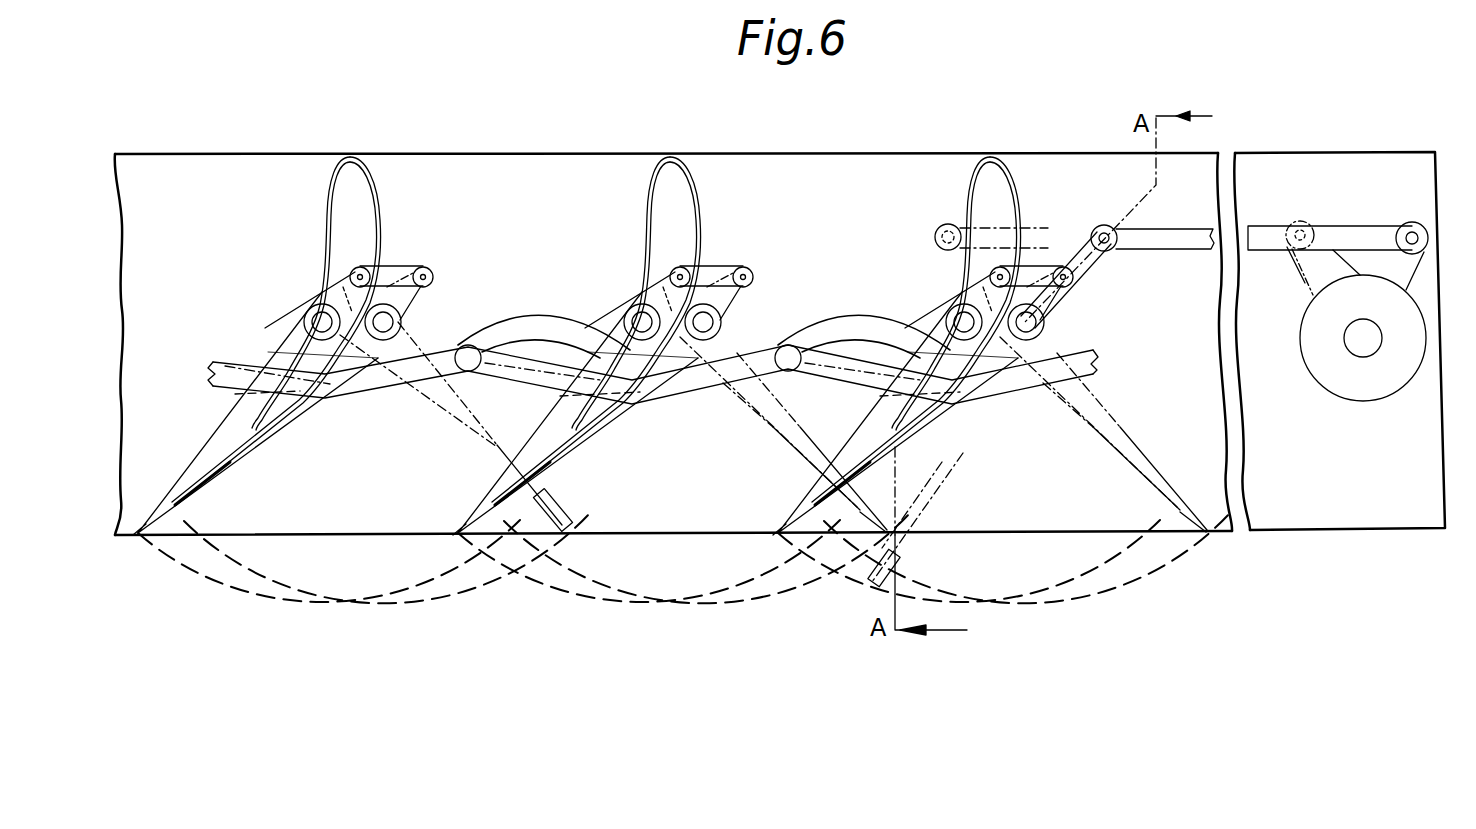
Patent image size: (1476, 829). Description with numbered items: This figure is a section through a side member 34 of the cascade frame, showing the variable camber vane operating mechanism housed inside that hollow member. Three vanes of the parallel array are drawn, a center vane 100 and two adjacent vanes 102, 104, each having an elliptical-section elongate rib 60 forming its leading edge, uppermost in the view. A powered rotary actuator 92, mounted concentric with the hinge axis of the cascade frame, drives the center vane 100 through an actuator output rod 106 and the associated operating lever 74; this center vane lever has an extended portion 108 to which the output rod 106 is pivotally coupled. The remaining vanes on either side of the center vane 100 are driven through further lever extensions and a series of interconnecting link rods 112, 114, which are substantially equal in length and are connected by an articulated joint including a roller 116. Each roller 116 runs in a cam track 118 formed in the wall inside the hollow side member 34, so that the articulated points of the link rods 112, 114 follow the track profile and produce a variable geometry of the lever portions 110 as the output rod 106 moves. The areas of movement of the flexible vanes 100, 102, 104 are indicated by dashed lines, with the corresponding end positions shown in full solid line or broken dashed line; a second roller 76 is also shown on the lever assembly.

The side member 34 is at (842, 157).
The elongate rib 60 is at (353, 203).
The operating lever 74 is at (301, 309).
The roller 76 is at (412, 310).
The powered rotary actuator 92 is at (1368, 380).
The center vane 100 is at (1024, 146).
The adjacent vane 102 is at (694, 146).
The adjacent vane 104 is at (366, 146).
The actuator output rod 106 is at (1194, 250).
The extended portion 108 is at (1089, 285).
The lever portion 110 is at (353, 368).
The link rod 112 is at (213, 384).
The link rod 114 is at (375, 382).
The roller 116 is at (468, 344).
The cam track 118 is at (537, 320).